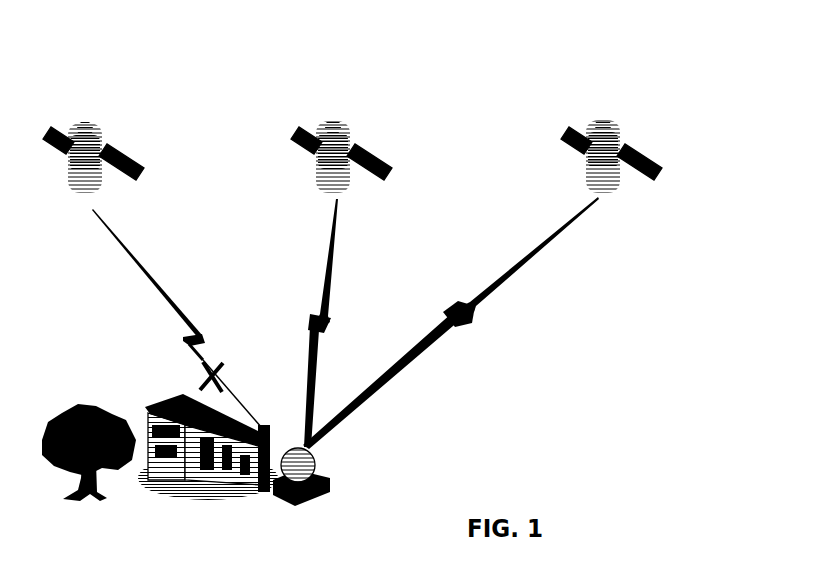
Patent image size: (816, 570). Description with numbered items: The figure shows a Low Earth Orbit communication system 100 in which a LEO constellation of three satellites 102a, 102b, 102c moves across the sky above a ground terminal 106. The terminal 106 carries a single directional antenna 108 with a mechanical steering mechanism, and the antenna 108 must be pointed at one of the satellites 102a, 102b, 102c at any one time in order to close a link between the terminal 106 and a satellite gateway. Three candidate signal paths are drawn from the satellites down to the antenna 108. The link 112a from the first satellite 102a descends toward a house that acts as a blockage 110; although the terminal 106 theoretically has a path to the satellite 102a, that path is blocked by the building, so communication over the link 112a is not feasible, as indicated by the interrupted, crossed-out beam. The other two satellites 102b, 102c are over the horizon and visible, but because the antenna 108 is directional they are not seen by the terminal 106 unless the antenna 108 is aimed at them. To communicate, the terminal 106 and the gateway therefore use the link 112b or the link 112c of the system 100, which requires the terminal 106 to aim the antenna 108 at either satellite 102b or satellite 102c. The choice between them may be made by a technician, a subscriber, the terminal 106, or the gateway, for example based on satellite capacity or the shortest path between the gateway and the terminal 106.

The LEO communication system 100 is at (560, 86).
The satellite 102a is at (120, 162).
The satellite 102b is at (380, 173).
The satellite 102c is at (650, 168).
The terminal 106 is at (315, 484).
The antenna 108 is at (307, 465).
The blockage 110 is at (267, 430).
The link 112a is at (133, 255).
The link 112b is at (332, 288).
The link 112c is at (500, 287).